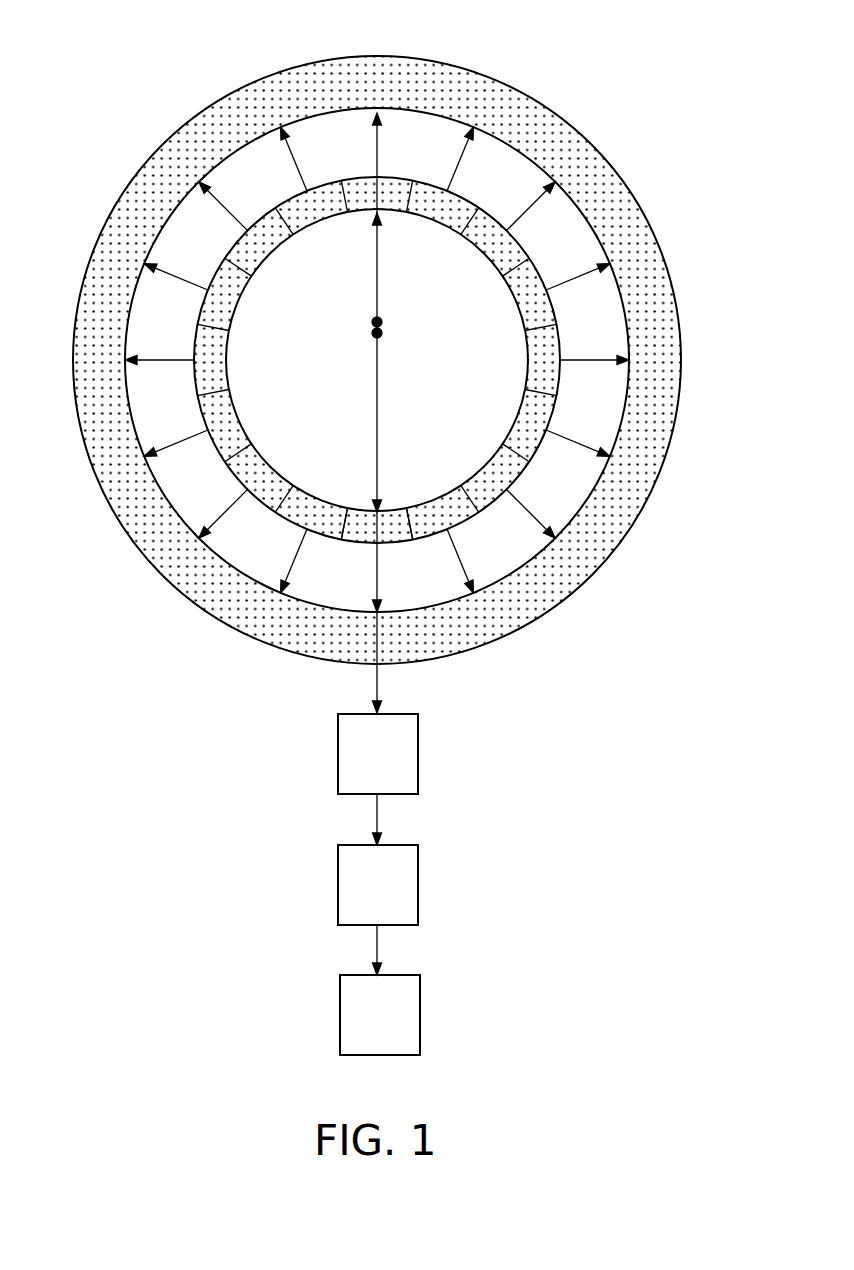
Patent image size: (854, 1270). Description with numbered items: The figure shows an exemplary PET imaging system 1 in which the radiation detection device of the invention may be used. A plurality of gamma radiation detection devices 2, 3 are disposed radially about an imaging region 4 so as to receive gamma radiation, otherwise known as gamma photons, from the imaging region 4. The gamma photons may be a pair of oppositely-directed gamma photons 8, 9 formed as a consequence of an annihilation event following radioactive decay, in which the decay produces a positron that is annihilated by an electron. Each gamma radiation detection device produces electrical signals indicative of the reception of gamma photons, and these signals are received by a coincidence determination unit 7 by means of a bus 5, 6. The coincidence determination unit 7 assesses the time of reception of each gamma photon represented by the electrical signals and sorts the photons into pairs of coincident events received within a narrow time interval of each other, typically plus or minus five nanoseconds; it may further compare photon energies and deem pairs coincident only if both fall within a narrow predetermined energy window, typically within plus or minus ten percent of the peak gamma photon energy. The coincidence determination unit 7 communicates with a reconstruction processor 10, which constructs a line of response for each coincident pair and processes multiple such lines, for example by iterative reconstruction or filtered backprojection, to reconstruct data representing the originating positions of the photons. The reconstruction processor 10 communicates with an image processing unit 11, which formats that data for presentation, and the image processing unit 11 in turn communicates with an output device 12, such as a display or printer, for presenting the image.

The PET imaging system 1 is at (644, 83).
The gamma radiation detection device 2 is at (357, 203).
The gamma radiation detection device 3 is at (390, 517).
The imaging region 4 is at (450, 352).
The bus 5 is at (377, 140).
The bus 6 is at (377, 583).
The coincidence determination unit 7 is at (635, 235).
The gamma photon 8 is at (383, 322).
The gamma photon 9 is at (371, 333).
The reconstruction processor 10 is at (418, 750).
The image processing unit 11 is at (418, 887).
The output device 12 is at (420, 1012).